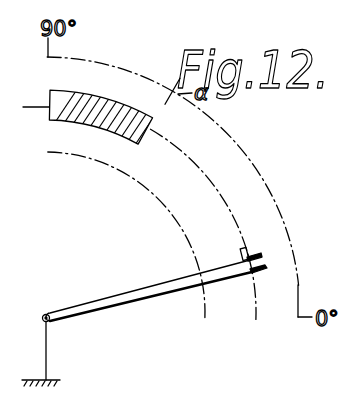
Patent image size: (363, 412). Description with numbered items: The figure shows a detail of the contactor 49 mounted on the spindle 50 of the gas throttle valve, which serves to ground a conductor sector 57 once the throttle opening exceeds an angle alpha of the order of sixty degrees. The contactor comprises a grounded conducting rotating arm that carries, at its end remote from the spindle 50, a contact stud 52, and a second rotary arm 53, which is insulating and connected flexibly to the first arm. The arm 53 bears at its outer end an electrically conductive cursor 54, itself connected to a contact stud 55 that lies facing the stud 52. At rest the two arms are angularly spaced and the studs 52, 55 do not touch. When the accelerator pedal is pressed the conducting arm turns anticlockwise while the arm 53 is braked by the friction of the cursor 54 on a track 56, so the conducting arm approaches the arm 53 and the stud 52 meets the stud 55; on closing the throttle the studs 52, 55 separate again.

The contactor 49 is at (134, 308).
The spindle 50 is at (44, 313).
The contact stud 52 is at (267, 267).
The second rotary arm 53 is at (123, 293).
The cursor 54 is at (241, 253).
The contact stud 55 is at (262, 255).
The track 56 is at (147, 193).
The conductor sector 57 is at (62, 107).